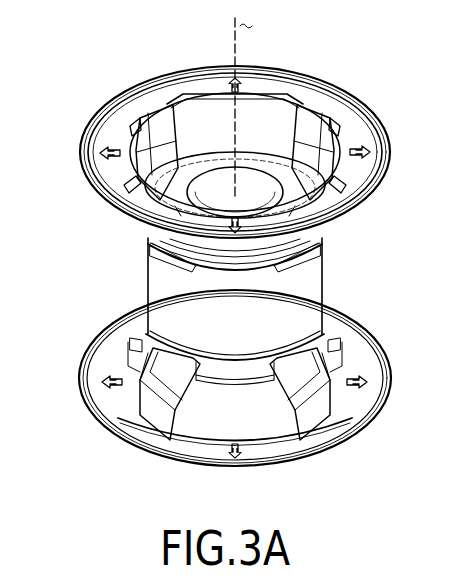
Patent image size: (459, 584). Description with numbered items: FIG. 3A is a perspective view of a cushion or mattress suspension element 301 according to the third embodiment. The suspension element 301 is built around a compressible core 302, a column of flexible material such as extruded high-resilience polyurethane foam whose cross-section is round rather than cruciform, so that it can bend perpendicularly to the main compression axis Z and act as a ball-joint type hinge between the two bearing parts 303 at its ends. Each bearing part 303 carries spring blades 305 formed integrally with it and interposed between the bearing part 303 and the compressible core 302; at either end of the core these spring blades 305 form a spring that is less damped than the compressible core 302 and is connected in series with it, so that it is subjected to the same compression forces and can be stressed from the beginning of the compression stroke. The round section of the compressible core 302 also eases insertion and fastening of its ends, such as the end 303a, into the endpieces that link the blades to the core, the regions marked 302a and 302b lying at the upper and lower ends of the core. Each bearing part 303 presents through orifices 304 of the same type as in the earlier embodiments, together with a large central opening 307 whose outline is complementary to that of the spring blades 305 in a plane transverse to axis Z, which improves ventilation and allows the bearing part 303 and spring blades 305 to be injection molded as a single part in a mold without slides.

The suspension element 301 is at (76, 67).
The compressible core 302 is at (160, 288).
The upper end of column 302a is at (238, 268).
The lower end collar of column 302b is at (237, 376).
The bearing part 303 is at (376, 118).
The end of the compressible core 303a is at (279, 84).
The through orifices 304 is at (230, 80).
The spring blades 305 is at (158, 135).
The central opening 307 is at (197, 415).